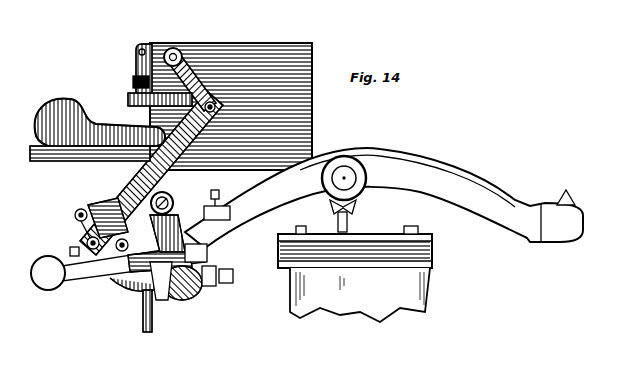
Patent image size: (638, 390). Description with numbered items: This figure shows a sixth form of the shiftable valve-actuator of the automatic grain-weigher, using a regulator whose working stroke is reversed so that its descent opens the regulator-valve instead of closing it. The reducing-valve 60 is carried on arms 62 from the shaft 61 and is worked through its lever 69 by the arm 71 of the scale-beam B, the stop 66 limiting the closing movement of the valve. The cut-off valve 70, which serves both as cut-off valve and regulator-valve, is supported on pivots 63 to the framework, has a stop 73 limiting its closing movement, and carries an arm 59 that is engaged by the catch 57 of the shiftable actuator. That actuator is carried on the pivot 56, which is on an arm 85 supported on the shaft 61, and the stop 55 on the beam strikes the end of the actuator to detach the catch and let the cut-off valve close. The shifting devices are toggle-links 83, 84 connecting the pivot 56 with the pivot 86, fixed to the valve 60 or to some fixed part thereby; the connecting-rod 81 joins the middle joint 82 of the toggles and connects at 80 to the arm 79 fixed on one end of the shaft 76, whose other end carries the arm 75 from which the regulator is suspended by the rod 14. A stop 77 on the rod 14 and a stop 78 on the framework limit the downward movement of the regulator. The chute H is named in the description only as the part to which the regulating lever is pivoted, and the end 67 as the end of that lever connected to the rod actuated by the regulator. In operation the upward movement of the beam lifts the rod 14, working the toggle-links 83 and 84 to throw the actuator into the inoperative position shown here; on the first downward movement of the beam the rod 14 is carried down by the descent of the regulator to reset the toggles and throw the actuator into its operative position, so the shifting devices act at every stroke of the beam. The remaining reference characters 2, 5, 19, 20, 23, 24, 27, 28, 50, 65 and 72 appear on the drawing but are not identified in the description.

The chute H is at (231, 95).
The beam B is at (384, 192).
The frame body 2 is at (378, 306).
The base plate 5 is at (436, 244).
The rod 14 is at (145, 332).
The arm portion 19 is at (265, 207).
The spring clip 20 is at (358, 205).
The bracket 23 is at (330, 250).
The post 24 is at (350, 222).
The pointer 27 is at (571, 196).
The arm end 28 is at (505, 200).
The roller 50 is at (340, 166).
The stop 55 is at (216, 192).
The pivot 56 is at (118, 256).
The catch 57 is at (160, 260).
The arm 59 is at (144, 231).
The reducing-valve 60 is at (136, 286).
The shaft 61 is at (150, 127).
The arm 62 is at (100, 206).
The pivot 63 is at (170, 196).
The bracket 65 is at (164, 300).
The stop 66 is at (70, 251).
The lever end 67 is at (138, 50).
The lever 69 is at (70, 102).
The cut-off valve 70 is at (188, 298).
The beam-arm 71 is at (34, 158).
The sleeve 72 is at (208, 256).
The stop 73 is at (235, 275).
The arm 75 is at (147, 44).
The shaft 76 is at (176, 49).
The stop 77 is at (133, 78).
The stop 78 is at (168, 106).
The arm 79 is at (196, 80).
The connection 80 is at (216, 106).
The connecting-rod 81 is at (193, 124).
The middle joint 82 is at (88, 242).
The toggle-link 83 is at (80, 228).
The toggle-link 84 is at (106, 272).
The arm 85 is at (126, 193).
The pivot 86 is at (78, 210).